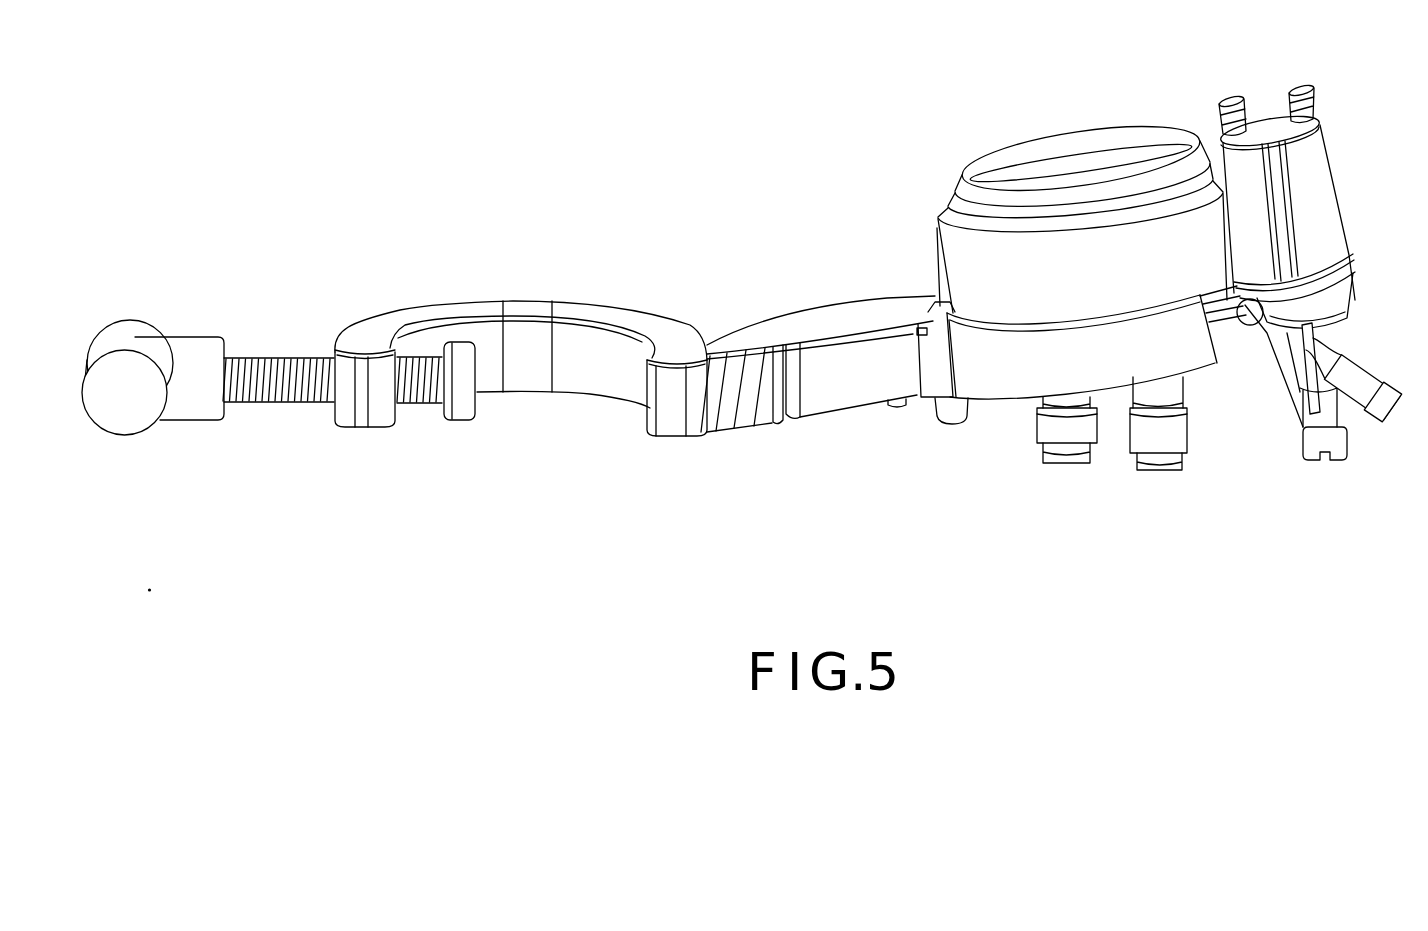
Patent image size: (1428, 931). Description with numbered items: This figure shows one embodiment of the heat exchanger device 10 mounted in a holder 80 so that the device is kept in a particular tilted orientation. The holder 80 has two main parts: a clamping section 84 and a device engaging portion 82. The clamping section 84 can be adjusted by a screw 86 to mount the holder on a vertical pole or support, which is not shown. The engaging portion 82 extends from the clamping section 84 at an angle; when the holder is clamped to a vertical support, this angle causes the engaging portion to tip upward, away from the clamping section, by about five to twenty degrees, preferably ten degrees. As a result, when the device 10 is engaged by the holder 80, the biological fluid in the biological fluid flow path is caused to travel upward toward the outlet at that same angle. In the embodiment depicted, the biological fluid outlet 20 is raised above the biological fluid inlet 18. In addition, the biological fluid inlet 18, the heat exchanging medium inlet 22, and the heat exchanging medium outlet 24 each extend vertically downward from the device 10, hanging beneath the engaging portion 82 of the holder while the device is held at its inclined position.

The device 10 is at (1081, 116).
The biological fluid inlet 18 is at (952, 414).
The biological fluid outlet 20 is at (1388, 398).
The heat exchanging medium inlet 22 is at (1177, 438).
The heat exchanging medium outlet 24 is at (1086, 436).
The holder 80 is at (736, 470).
The device engaging portion 82 is at (1024, 375).
The clamping section 84 is at (525, 310).
The screw 86 is at (283, 403).